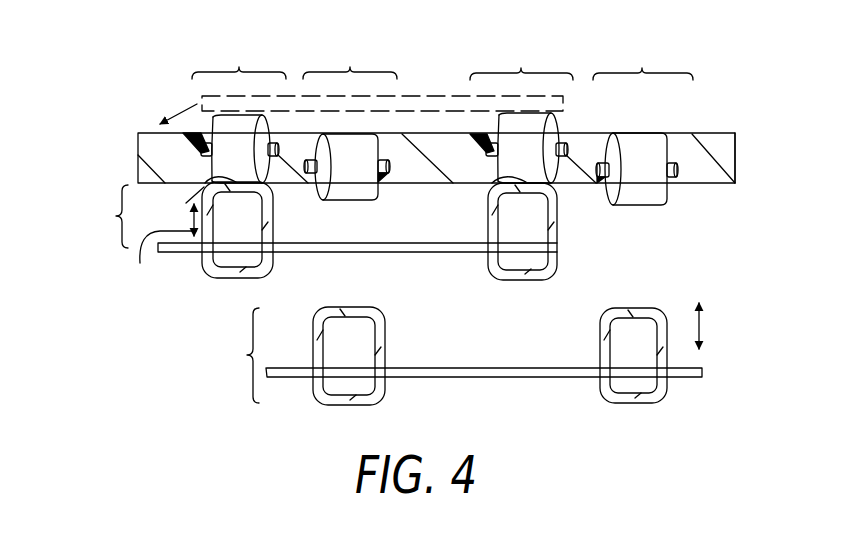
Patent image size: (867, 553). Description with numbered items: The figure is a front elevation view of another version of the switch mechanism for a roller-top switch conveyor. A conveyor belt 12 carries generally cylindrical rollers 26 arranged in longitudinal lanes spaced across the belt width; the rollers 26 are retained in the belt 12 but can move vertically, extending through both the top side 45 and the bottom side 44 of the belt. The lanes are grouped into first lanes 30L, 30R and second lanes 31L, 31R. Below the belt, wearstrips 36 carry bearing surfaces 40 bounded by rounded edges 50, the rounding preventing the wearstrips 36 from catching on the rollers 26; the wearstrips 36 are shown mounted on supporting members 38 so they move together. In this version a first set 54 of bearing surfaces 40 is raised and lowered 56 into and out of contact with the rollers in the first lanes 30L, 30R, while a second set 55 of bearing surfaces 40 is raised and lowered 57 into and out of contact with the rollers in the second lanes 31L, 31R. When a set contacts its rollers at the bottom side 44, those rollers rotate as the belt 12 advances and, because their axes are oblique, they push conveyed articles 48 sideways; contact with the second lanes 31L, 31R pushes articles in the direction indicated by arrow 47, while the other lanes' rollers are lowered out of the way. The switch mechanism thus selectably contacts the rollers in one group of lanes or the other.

The conveyor belt 12 is at (138, 166).
The rollers 26 is at (632, 133).
The first lane 30L is at (643, 116).
The first lane 30R is at (350, 114).
The second lane 31L is at (521, 105).
The second lane 31R is at (236, 116).
The wearstrip 36 is at (557, 223).
The rod 38 is at (400, 243).
The bearing surfaces 40 is at (625, 308).
The bottom side 44 is at (708, 183).
The top side 45 is at (700, 133).
The arrow 47 is at (176, 112).
The conveyed articles 48 is at (417, 97).
The edges 50 is at (275, 192).
The first set of bearing surfaces 54 is at (232, 355).
The second set of bearing surfaces 55 is at (101, 216).
The raising and lowering 56 is at (707, 330).
The raising and lowering 57 is at (166, 263).